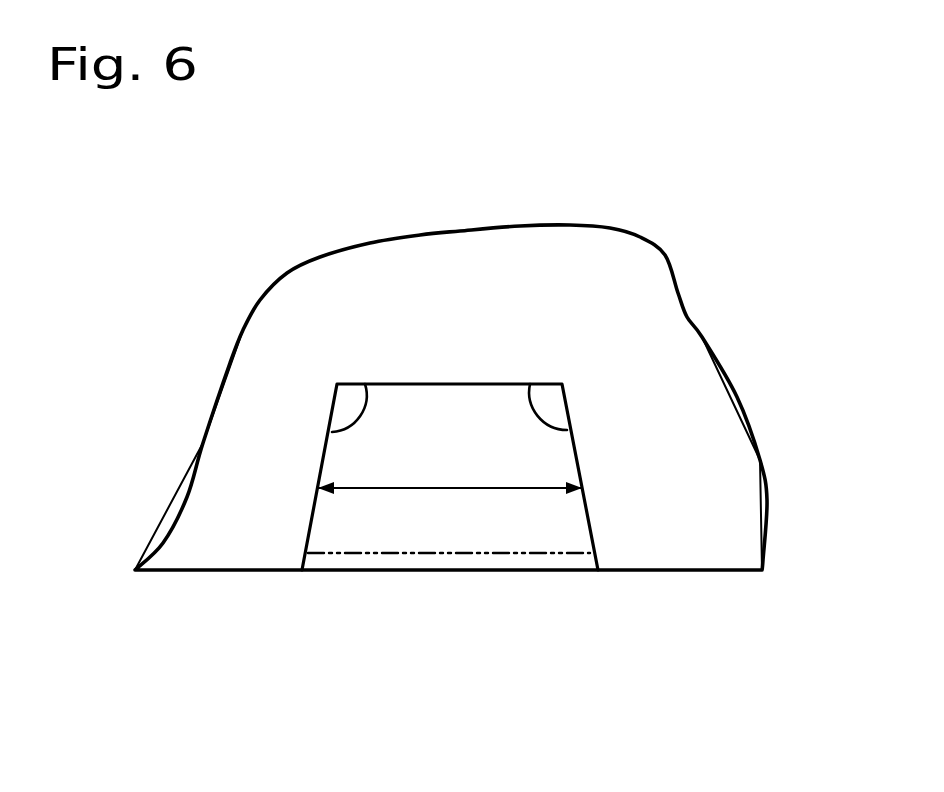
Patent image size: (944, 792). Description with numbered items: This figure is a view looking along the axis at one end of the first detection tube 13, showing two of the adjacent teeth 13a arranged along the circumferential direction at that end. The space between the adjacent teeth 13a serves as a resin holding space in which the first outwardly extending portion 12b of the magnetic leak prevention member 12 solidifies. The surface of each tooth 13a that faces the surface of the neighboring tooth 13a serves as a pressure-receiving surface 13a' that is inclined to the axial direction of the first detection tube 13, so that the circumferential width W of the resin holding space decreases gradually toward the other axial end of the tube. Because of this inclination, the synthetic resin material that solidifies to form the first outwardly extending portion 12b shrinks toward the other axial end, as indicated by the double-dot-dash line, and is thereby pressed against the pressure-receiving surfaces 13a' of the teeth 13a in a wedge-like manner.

The first detection tube 13 is at (435, 272).
The teeth 13a is at (465, 450).
The pressure-receiving surface 13a' is at (459, 347).
The magnetic leak prevention member 12 is at (365, 532).
The first outwardly extending portion 12b is at (442, 532).
The circumferential width W is at (420, 488).